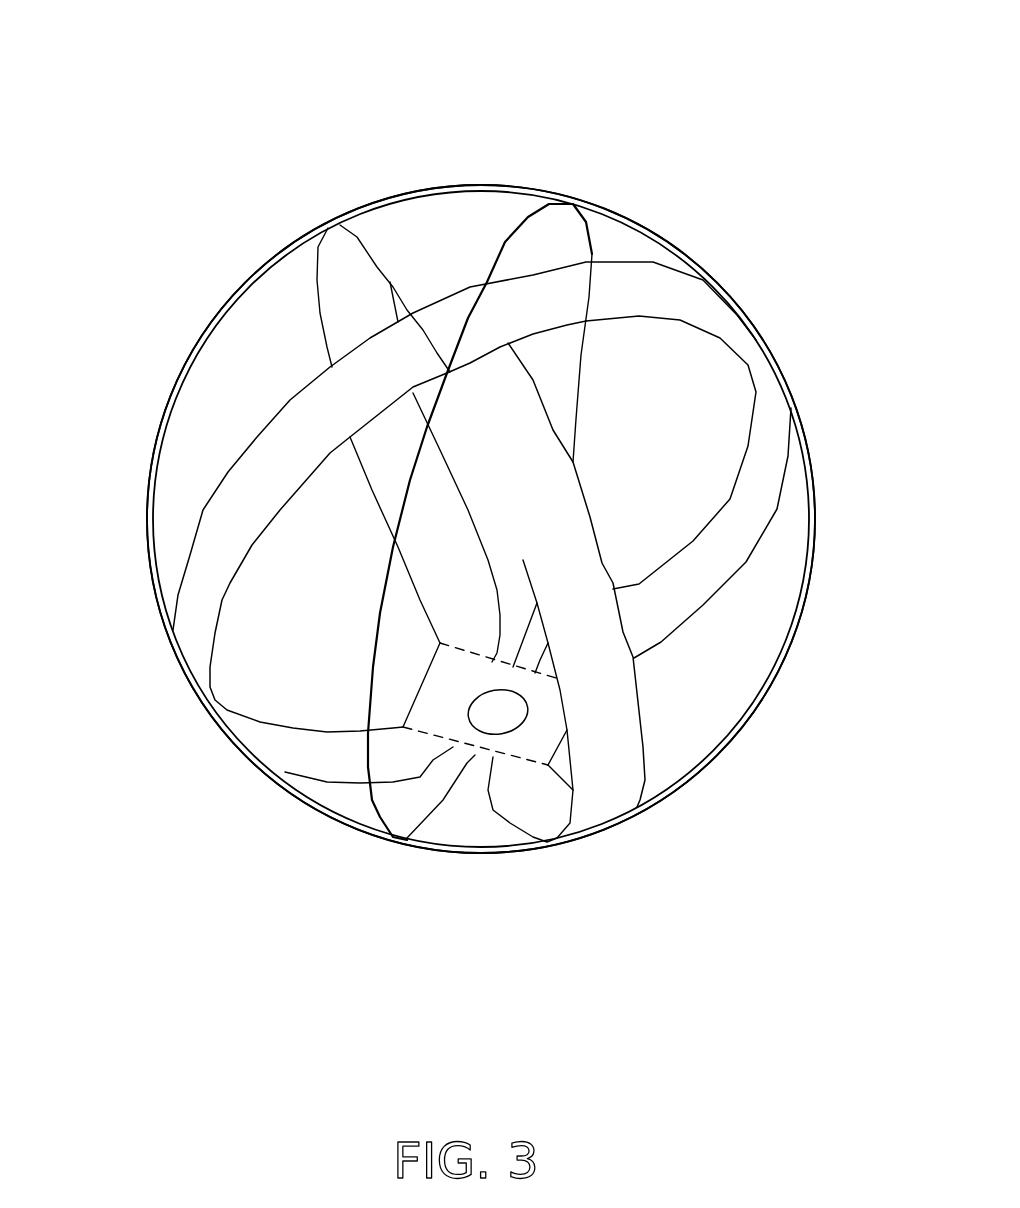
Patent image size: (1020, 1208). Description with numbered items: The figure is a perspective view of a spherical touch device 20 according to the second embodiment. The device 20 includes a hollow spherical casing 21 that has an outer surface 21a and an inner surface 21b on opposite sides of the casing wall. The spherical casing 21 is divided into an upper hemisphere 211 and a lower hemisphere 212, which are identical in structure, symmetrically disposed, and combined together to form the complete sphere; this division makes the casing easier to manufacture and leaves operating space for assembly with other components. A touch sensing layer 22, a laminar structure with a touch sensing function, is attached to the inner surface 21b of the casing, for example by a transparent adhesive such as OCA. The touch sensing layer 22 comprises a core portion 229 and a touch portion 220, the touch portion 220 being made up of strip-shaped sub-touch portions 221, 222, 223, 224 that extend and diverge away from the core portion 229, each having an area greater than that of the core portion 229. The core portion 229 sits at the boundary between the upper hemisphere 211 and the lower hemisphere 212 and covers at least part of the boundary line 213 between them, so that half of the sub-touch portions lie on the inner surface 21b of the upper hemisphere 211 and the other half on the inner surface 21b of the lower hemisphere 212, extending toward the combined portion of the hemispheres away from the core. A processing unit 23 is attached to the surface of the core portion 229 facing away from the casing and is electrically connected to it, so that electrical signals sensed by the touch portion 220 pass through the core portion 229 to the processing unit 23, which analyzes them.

The spherical touch device 20 is at (424, 32).
The spherical casing 21 is at (531, 467).
The upper hemisphere 211 is at (527, 203).
The lower hemisphere 212 is at (608, 230).
The outer surface 21a is at (815, 497).
The inner surface 21b is at (807, 578).
The touch sensing layer 22 is at (652, 263).
The touch portion 220 is at (341, 475).
The sub-touch portion 221 is at (378, 232).
The sub-touch portion 222 is at (327, 407).
The sub-touch portion 223 is at (580, 300).
The sub-touch portion 224 is at (510, 440).
The processing unit 23 is at (498, 712).
The core portion 229 is at (485, 778).
The boundary line 213 is at (365, 750).